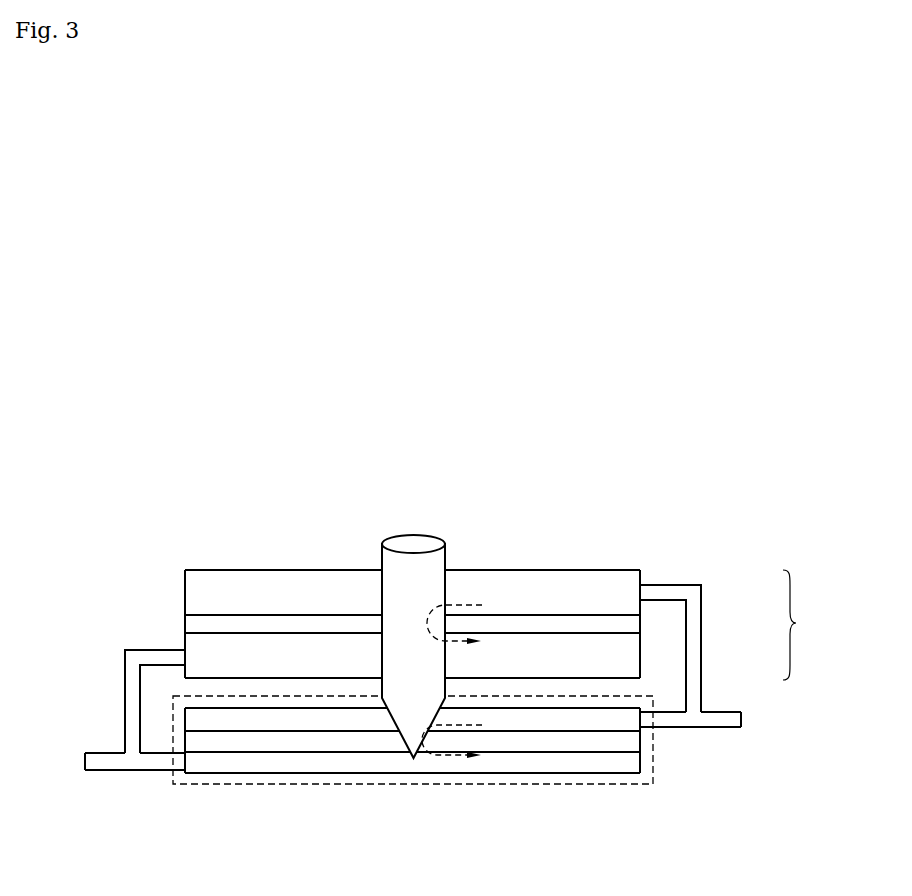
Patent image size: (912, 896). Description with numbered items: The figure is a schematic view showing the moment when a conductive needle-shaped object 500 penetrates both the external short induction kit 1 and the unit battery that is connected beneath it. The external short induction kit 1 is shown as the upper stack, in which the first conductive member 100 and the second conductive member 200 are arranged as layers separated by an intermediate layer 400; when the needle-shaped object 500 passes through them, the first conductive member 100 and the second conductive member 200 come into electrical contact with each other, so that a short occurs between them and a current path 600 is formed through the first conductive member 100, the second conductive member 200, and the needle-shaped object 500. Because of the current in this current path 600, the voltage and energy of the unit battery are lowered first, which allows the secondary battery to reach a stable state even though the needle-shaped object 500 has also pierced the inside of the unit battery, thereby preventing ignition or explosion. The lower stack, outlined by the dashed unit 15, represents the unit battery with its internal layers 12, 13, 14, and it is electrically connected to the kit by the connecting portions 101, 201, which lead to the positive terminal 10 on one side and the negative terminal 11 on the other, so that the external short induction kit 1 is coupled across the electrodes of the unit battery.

The external short induction kit 1 is at (799, 625).
The positive terminal 10 is at (88, 763).
The negative terminal 11 is at (737, 723).
The lower cooling plate 12 is at (312, 762).
The lower battery cell layer 13 is at (213, 718).
The lower heat transfer layer 14 is at (258, 740).
The lower unit 15 is at (552, 786).
The first conductive member 100 is at (242, 650).
The first connecting pipe 101 is at (132, 685).
The second conductive member 200 is at (350, 585).
The second connecting pipe 201 is at (693, 632).
The coolant channel layer 400 is at (292, 627).
The needle-shaped object 500 is at (413, 558).
The current path 600 is at (462, 605).